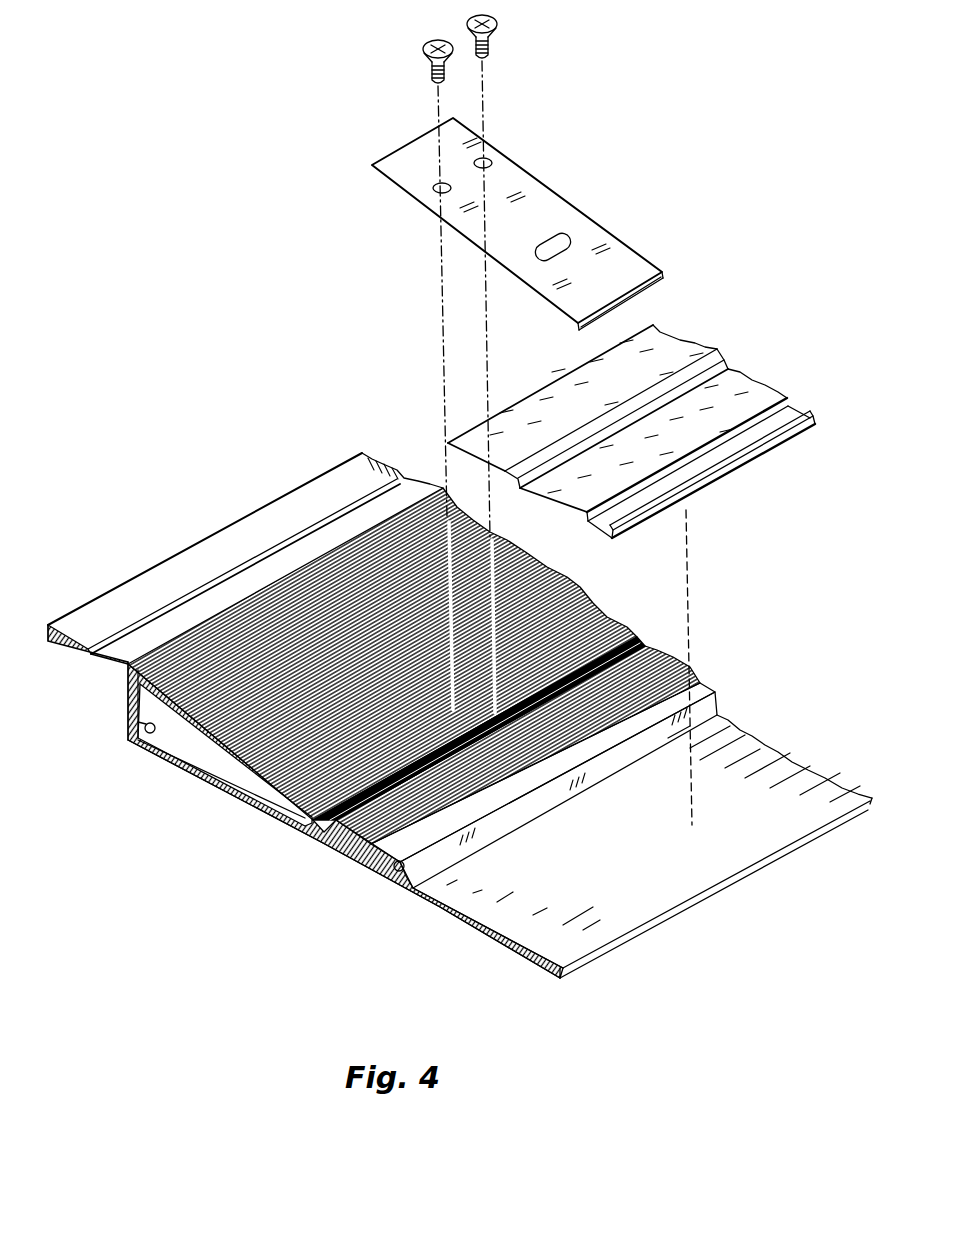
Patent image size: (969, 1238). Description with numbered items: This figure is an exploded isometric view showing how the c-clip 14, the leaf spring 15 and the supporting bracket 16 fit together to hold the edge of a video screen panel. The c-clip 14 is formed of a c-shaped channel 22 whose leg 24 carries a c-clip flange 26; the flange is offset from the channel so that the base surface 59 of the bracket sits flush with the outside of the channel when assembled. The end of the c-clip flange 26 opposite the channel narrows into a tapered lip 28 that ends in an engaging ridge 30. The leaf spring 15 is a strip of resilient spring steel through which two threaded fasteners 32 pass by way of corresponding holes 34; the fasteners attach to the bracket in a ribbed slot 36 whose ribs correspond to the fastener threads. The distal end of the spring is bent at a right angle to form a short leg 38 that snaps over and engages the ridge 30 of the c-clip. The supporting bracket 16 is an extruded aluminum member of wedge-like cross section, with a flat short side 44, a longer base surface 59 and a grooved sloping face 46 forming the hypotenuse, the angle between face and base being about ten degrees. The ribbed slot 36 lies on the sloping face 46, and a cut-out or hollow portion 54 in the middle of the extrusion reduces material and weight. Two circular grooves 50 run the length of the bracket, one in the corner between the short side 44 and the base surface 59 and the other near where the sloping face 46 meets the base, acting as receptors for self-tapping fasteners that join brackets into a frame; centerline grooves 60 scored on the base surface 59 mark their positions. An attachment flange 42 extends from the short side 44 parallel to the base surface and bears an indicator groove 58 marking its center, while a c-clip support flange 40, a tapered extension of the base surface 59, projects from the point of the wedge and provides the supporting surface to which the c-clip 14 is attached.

The c-clip 14 is at (657, 429).
The leaf spring 15 is at (530, 224).
The supporting bracket 16 is at (460, 718).
The c-shaped channel 22 is at (800, 415).
The leg 24 is at (588, 521).
The c-clip flange 26 is at (748, 382).
The tapered lip 28 is at (654, 327).
The ridge 30 is at (714, 343).
The threaded fastener 32 is at (433, 67).
The hole 34 is at (431, 188).
The ribbed slot 36 is at (320, 840).
The short leg 38 is at (658, 278).
The c-clip support flange 40 is at (755, 842).
The attachment flange 42 is at (167, 575).
The short side 44 is at (125, 707).
The sloping face 46 is at (598, 617).
The circular groove 50 is at (133, 737).
The cut-out or hollow portion 54 is at (270, 795).
The indicator groove 58 is at (333, 510).
The base surface 59 is at (457, 927).
The centerline groove 60 is at (158, 758).